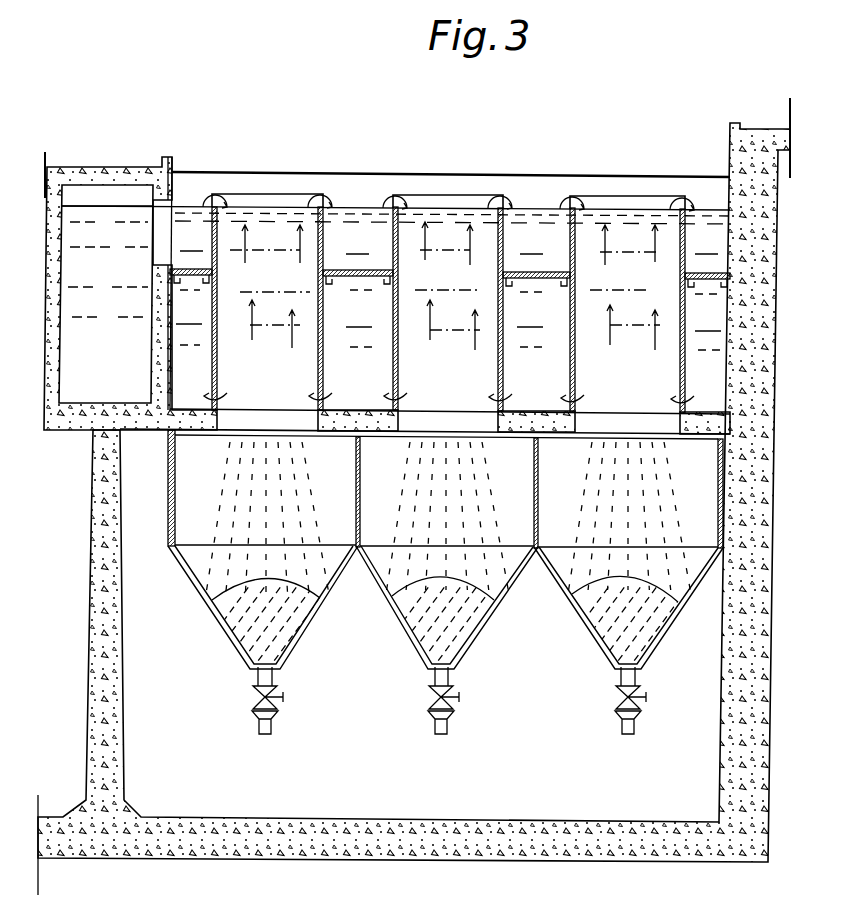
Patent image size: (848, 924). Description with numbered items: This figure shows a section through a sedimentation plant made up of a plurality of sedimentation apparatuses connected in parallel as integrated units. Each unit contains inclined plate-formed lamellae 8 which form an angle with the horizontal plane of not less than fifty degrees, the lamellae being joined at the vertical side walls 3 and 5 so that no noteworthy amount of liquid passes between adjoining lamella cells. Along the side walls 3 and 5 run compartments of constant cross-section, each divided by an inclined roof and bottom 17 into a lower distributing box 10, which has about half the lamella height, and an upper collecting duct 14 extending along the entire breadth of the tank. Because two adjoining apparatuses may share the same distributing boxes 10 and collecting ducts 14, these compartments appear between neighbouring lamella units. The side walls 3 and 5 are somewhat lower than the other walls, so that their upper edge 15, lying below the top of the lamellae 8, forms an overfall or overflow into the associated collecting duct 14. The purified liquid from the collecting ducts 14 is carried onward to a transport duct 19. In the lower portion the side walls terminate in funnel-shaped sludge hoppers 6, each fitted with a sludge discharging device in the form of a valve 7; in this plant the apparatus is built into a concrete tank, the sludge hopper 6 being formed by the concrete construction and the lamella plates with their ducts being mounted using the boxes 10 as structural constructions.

The side wall 3 is at (323, 370).
The side wall 5 is at (212, 359).
The sludge hopper 6 is at (230, 629).
The valve 7 is at (257, 693).
The lamellae 8 is at (262, 194).
The distributing box 10 is at (451, 320).
The collecting duct 14 is at (453, 240).
The upper edge 15 is at (396, 207).
The inclined roof and bottom 17 is at (363, 276).
The transport duct 19 is at (100, 193).